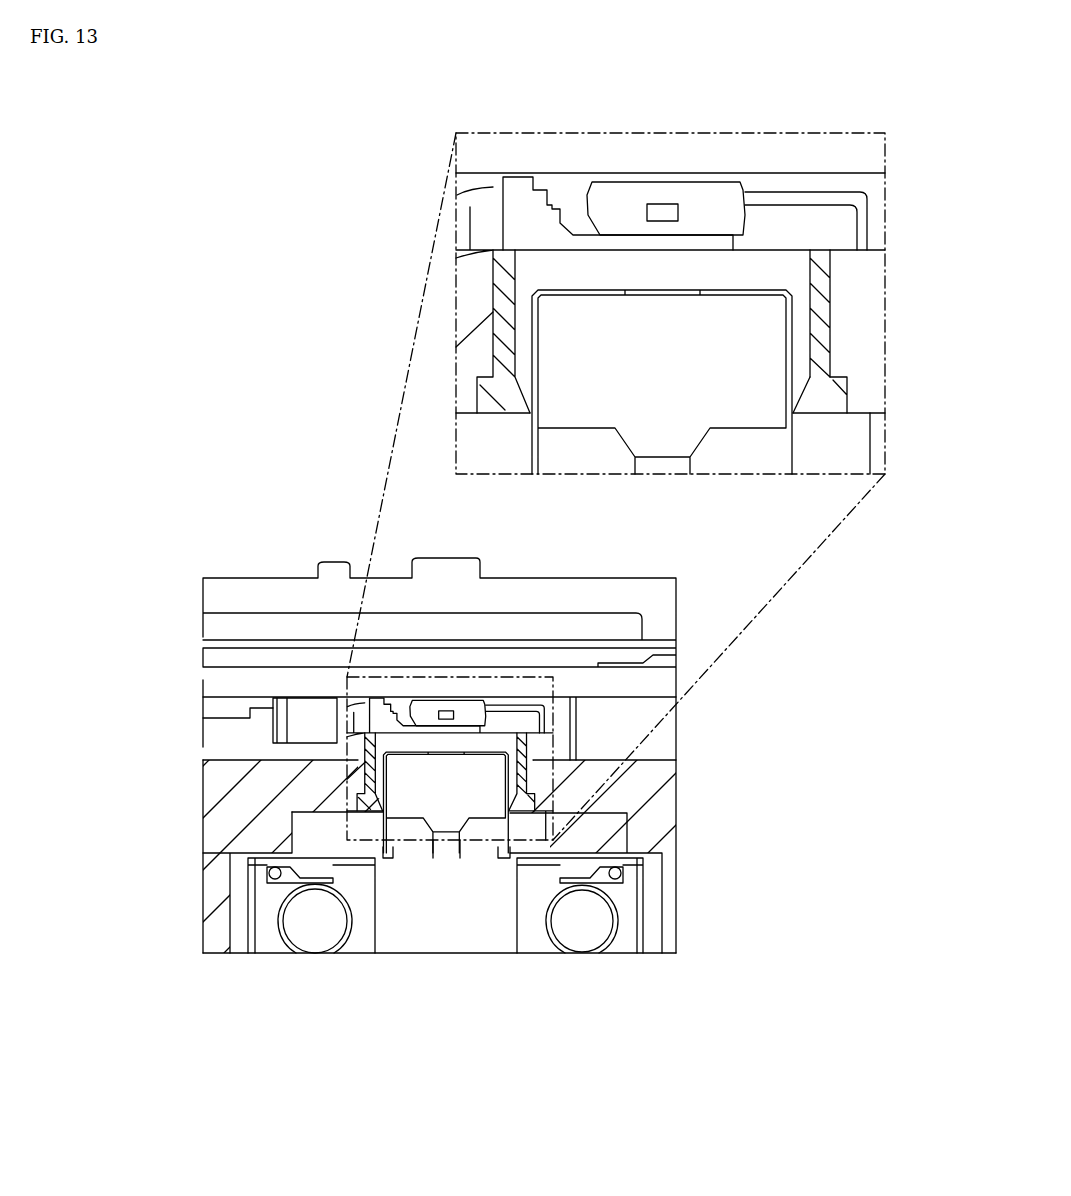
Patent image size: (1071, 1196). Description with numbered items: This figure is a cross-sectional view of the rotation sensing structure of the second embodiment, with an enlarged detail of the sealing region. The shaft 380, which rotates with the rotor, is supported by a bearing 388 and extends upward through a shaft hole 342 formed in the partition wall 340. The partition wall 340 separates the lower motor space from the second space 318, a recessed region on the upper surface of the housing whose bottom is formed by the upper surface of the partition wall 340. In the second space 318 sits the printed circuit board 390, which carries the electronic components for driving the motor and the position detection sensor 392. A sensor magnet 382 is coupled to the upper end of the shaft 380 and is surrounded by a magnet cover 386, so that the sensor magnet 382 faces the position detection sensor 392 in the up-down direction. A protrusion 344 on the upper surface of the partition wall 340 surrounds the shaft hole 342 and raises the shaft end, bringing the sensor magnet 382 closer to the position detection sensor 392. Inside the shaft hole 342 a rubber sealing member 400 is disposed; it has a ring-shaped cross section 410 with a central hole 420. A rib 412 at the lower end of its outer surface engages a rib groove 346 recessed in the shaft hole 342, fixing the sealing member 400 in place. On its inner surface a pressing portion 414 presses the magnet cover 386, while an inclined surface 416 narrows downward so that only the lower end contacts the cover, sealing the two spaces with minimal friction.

The second space 318 is at (628, 722).
The partition wall 340 is at (635, 785).
The shaft hole 342 is at (370, 727).
The protrusion 344 is at (337, 743).
The rib groove 346 is at (350, 802).
The shaft 380 is at (428, 903).
The sensor magnet 382 is at (722, 395).
The magnet cover 386 is at (375, 838).
The bearing 388 is at (630, 912).
The printed circuit board 390 is at (620, 685).
The position detection sensor 392 is at (696, 203).
The sealing member 400 is at (538, 769).
The ring-shaped cross section 410 is at (817, 322).
The rib 412 is at (840, 397).
The pressing portion 414 is at (798, 405).
The inclined surface 416 is at (806, 364).
The hole 420 is at (780, 278).